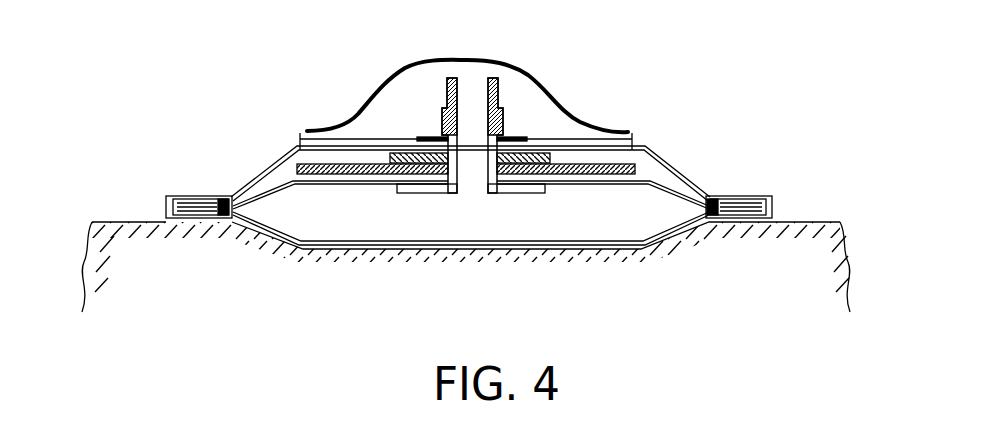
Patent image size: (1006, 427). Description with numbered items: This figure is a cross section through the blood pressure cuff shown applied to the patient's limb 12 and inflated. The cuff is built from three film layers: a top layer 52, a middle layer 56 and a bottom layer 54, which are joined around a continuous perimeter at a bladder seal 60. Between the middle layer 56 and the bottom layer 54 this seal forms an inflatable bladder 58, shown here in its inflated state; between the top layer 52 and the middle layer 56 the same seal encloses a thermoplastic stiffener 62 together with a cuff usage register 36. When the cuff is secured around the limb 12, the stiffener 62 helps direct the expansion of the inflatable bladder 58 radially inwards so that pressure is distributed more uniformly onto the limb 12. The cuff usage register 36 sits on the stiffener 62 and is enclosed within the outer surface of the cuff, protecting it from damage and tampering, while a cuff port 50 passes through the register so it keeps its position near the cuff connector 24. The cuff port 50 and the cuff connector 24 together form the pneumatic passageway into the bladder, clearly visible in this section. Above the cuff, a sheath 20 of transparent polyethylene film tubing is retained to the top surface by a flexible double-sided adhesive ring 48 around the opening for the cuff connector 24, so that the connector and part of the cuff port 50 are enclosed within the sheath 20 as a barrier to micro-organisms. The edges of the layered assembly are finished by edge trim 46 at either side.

The limb 12 is at (843, 222).
The sheath 20 is at (383, 101).
The cuff connector 24 is at (499, 98).
The cuff usage register 36 is at (637, 165).
The edge trim 46 is at (205, 193).
The double-sided adhesive ring 48 is at (527, 139).
The cuff port 50 is at (410, 194).
The top layer 52 is at (300, 140).
The bottom layer 54 is at (572, 243).
The middle layer 56 is at (687, 179).
The inflatable bladder 58 is at (497, 228).
The bladder seal 60 is at (222, 220).
The thermoplastic stiffener 62 is at (681, 180).